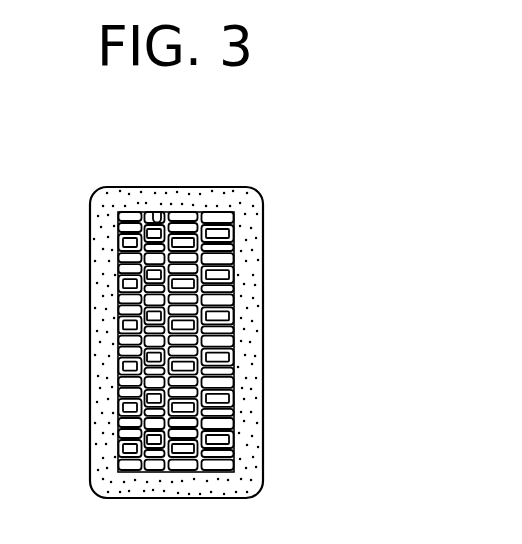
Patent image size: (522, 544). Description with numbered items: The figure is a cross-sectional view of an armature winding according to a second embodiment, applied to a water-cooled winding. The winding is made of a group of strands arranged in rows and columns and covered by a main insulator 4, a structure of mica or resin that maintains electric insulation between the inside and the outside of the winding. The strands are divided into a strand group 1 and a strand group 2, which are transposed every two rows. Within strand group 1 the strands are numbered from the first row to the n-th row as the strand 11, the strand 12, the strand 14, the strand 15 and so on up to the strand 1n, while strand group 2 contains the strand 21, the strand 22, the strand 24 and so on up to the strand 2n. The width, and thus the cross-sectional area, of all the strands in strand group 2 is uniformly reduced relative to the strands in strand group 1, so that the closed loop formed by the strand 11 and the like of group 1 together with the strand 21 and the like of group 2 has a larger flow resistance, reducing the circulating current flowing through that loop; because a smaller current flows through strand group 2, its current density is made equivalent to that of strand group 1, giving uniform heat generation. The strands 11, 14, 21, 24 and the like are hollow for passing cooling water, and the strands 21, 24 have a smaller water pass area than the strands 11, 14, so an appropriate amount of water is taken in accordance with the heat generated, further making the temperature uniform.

The strand group 1 is at (217, 219).
The strand 11 is at (228, 234).
The strand 12 is at (228, 245).
The strand 14 is at (228, 273).
The strand 15 is at (228, 293).
The strand 1n is at (237, 467).
The strand group 2 is at (158, 216).
The strand 21 is at (156, 214).
The strand 22 is at (151, 258).
The strand 24 is at (151, 293).
The strand 2n is at (150, 463).
The main insulator 4 is at (252, 373).